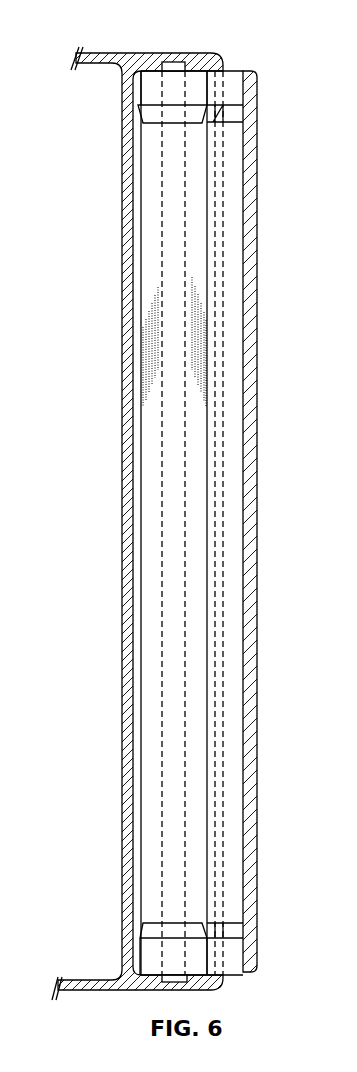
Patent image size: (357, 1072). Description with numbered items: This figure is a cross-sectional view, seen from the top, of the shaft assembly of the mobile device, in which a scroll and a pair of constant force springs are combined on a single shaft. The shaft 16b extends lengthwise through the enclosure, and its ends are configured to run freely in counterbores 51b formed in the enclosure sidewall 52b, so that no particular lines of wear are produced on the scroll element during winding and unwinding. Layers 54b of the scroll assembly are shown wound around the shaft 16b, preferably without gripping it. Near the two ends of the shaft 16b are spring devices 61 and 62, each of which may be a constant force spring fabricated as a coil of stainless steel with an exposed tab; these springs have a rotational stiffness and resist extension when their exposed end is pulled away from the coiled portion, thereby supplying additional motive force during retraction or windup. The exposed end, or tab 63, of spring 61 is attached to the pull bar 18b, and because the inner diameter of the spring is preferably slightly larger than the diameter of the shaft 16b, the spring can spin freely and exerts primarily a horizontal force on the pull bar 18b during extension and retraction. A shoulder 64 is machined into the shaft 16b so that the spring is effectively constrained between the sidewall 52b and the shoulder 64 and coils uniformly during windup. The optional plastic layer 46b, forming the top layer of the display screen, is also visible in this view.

The sidewall 52b is at (147, 63).
The counterbore 51b is at (173, 62).
The exposed end (tab) 63 is at (232, 82).
The spring device 61 is at (157, 85).
The shoulder 64 is at (150, 122).
The layers of the scroll assembly 54b is at (150, 360).
The pull bar 18b is at (252, 402).
The plastic layer 46b is at (235, 620).
The shaft 16b is at (172, 730).
The spring device 62 is at (153, 957).